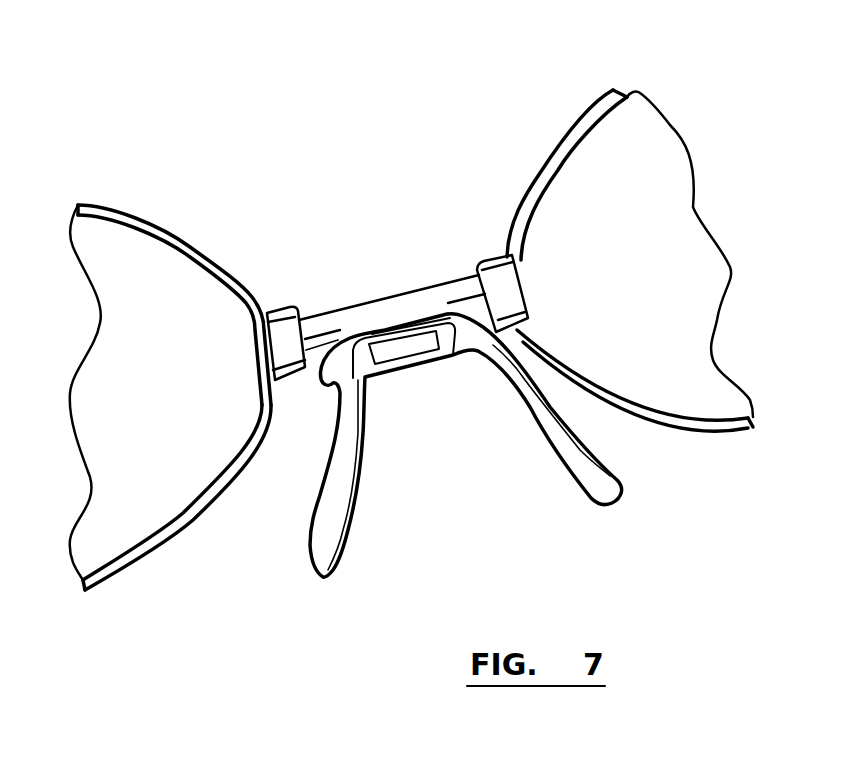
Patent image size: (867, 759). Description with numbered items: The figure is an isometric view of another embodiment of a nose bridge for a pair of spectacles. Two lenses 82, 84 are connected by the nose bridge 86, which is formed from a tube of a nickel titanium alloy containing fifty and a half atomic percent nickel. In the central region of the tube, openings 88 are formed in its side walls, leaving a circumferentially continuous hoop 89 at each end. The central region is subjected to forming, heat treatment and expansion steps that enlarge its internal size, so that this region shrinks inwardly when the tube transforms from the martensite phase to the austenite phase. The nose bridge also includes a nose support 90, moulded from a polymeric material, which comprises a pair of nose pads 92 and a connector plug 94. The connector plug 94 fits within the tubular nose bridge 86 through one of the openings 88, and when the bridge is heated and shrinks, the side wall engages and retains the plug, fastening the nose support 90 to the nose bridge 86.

The lens 82 is at (142, 287).
The lens 84 is at (600, 220).
The nose bridge 86 is at (357, 290).
The openings 88 is at (413, 302).
The hoop 89 is at (287, 304).
The nose support 90 is at (347, 557).
The nose pads 92 is at (353, 508).
The connector plug 94 is at (407, 350).